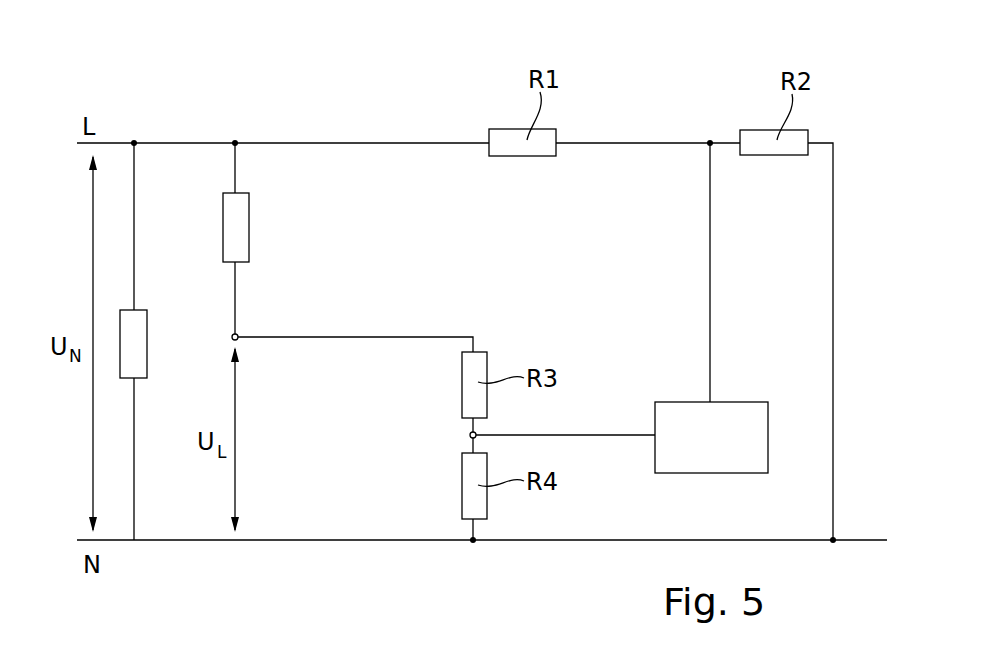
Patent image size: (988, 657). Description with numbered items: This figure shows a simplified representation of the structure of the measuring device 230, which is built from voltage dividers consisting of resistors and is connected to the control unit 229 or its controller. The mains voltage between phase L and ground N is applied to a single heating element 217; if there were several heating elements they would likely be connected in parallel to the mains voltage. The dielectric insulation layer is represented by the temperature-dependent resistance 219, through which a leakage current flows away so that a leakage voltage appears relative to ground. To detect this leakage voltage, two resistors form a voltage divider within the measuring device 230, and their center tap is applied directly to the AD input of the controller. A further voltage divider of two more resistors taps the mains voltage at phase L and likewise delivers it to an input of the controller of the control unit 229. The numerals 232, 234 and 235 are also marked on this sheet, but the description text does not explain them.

The heating element 217 is at (136, 340).
The temperature-dependent resistance R(T) 219 is at (236, 228).
The control unit 229 is at (748, 400).
The measuring device 230 is at (721, 74).
The component 232 is at (131, 13).
The component 234 is at (223, 13).
The component 235 is at (326, 13).